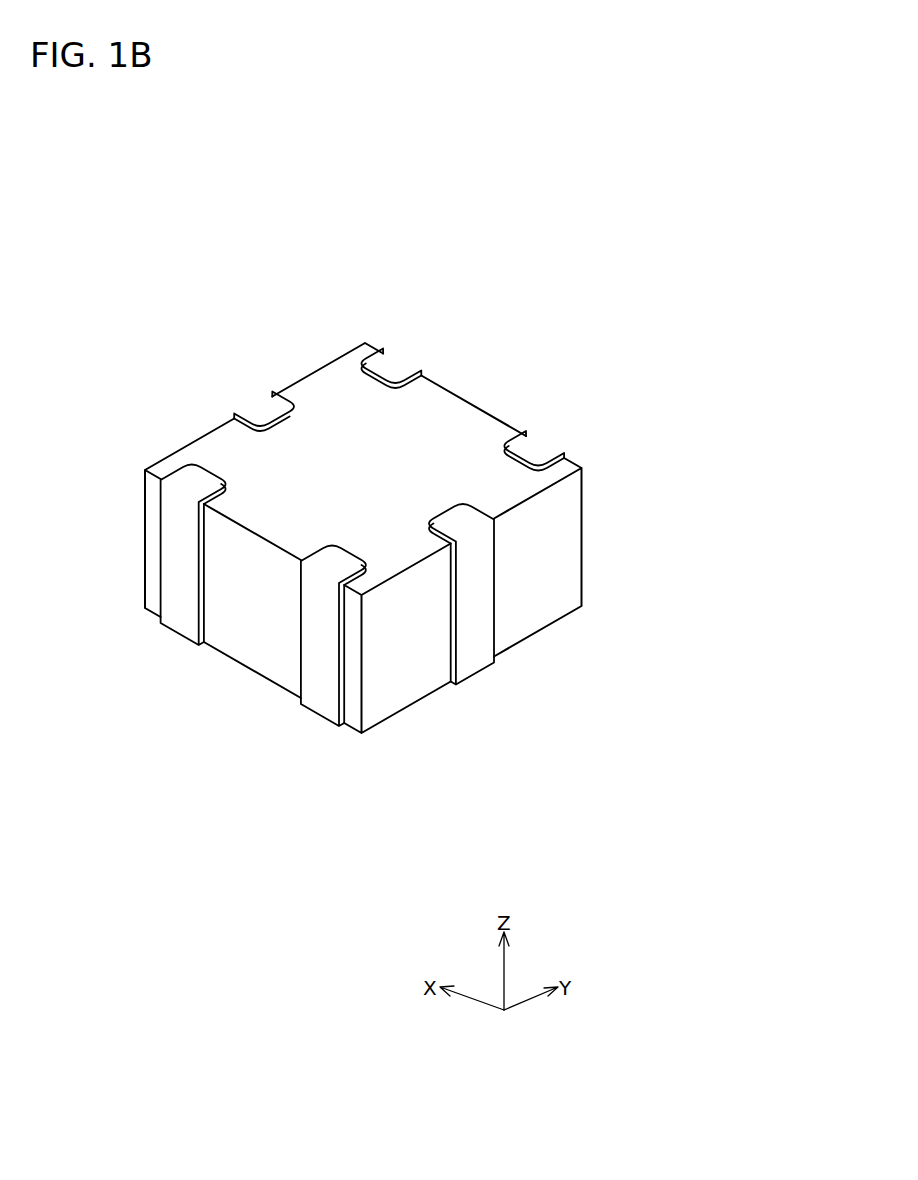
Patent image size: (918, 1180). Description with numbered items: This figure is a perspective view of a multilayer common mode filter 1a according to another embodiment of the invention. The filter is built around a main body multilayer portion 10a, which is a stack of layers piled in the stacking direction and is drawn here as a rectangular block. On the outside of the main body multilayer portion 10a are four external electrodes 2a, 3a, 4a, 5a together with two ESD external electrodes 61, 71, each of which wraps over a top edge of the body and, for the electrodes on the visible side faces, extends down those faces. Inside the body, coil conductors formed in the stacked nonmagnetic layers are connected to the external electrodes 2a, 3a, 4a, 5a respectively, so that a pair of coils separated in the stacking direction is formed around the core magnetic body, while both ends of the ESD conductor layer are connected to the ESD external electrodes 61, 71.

The common mode filter 1a is at (336, 521).
The main body multilayer portion 10a is at (419, 704).
The external electrode 2a is at (173, 575).
The external electrode 3a is at (390, 363).
The external electrode 4a is at (315, 658).
The external electrode 5a is at (535, 445).
The ESD external electrode 61 is at (267, 410).
The ESD external electrode 71 is at (487, 628).